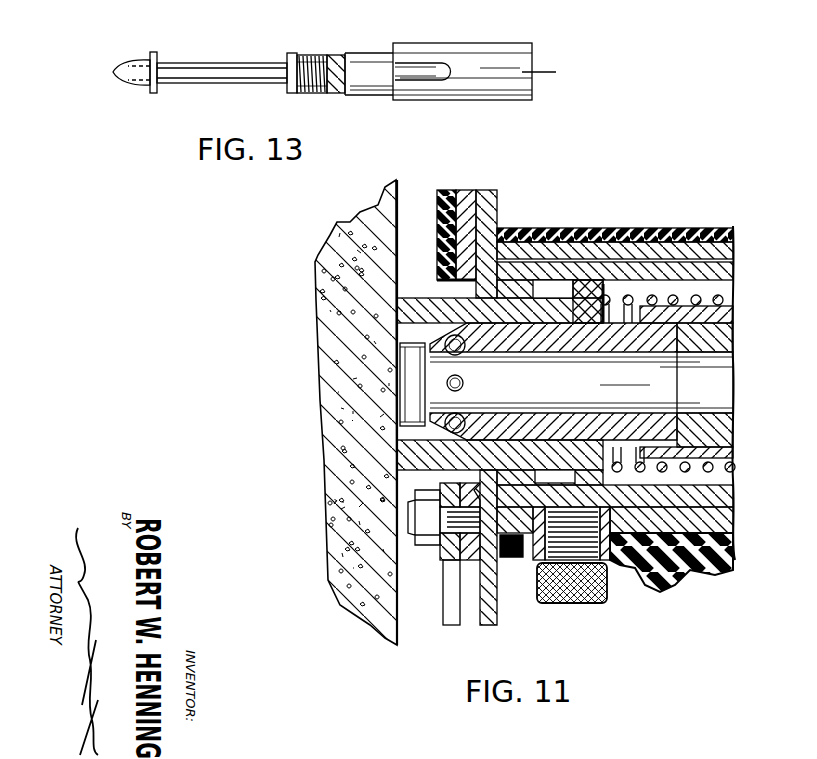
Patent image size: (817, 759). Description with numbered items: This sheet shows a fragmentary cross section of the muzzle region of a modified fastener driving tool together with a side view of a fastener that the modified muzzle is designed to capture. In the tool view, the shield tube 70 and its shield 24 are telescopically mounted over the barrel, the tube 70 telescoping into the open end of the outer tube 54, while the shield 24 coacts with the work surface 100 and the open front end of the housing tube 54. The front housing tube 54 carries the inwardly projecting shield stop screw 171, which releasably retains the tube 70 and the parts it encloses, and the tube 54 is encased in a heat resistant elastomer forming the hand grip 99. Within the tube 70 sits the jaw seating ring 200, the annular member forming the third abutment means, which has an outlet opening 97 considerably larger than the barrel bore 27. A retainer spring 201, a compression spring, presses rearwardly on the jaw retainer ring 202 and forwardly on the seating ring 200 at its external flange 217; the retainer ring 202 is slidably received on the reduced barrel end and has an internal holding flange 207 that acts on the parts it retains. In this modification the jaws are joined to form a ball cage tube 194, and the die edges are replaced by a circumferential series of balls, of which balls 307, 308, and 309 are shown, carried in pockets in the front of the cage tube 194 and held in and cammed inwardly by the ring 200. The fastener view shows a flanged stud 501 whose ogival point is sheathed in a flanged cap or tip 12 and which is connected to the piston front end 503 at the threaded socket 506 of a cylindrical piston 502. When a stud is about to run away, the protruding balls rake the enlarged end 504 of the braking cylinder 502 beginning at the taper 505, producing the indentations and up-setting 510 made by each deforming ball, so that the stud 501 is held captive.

In FIG. 13, the tip 12 is at (128, 69).
In FIG. 13, the flanged stud 501 is at (172, 63).
In FIG. 13, the cylindrical piston 502 is at (440, 30).
In FIG. 13, the piston front end 503 is at (334, 55).
In FIG. 13, the enlarged end 504 is at (558, 73).
In FIG. 13, the taper 505 is at (388, 53).
In FIG. 13, the threaded socket 506 is at (322, 93).
In FIG. 13, the indentations and up-setting 510 is at (416, 78).
In FIG. 11, the shield 24 is at (440, 628).
In FIG. 11, the barrel bore 27 is at (737, 361).
In FIG. 11, the outer tube 54 is at (735, 246).
In FIG. 11, the shield tube 70 is at (727, 496).
In FIG. 11, the outlet opening 97 is at (400, 390).
In FIG. 11, the hand grip 99 is at (740, 553).
In FIG. 11, the work surface 100 is at (348, 523).
In FIG. 11, the shield stop screw 171 is at (585, 598).
In FIG. 11, the ball cage tube 194 is at (650, 387).
In FIG. 11, the jaw seating ring 200 is at (395, 297).
In FIG. 11, the retainer spring 201 is at (700, 300).
In FIG. 11, the jaw retainer ring 202 is at (735, 313).
In FIG. 11, the internal holding flange 207 is at (648, 446).
In FIG. 11, the external flange 217 is at (588, 298).
In FIG. 11, the ball 307 is at (463, 353).
In FIG. 11, the ball 308 is at (465, 383).
In FIG. 11, the ball 309 is at (464, 417).